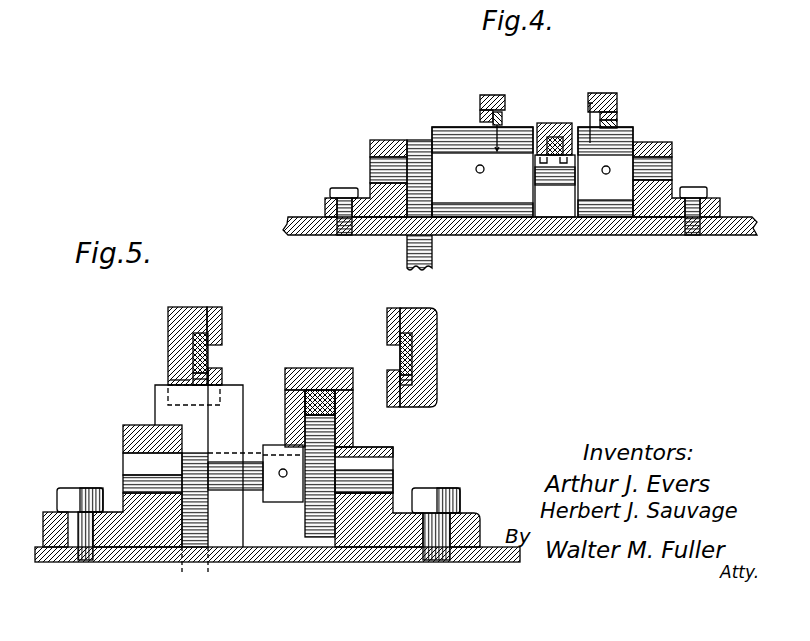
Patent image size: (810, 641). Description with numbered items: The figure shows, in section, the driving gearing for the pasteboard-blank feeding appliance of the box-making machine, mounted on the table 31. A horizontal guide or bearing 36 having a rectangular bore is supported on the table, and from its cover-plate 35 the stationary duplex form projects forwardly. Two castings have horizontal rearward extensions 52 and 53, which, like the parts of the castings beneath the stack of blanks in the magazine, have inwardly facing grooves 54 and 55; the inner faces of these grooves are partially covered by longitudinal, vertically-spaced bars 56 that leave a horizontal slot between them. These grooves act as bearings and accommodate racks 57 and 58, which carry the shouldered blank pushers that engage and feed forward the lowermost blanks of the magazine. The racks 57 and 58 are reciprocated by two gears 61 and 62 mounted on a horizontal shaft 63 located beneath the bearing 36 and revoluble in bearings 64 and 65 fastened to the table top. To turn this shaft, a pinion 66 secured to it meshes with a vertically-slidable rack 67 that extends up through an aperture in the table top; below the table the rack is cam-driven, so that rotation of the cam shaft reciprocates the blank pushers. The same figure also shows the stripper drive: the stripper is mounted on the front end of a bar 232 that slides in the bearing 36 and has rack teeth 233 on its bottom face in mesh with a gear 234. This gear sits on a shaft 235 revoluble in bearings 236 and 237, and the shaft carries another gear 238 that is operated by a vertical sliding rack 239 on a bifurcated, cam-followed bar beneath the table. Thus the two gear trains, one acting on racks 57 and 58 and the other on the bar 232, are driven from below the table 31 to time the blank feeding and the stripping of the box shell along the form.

In FIG. 4, the table 31 is at (585, 226).
In FIG. 5, the table 31 is at (382, 555).
In FIG. 4, the cover-plate 35 is at (548, 123).
In FIG. 5, the cover-plate 35 is at (315, 368).
In FIG. 4, the horizontal guide or bearing 36 is at (572, 130).
In FIG. 5, the horizontal guide or bearing 36 is at (353, 430).
In FIG. 5, the rearward extension 52 is at (173, 333).
In FIG. 4, the rearward extension 53 is at (615, 93).
In FIG. 5, the rearward extension 53 is at (437, 355).
In FIG. 4, the groove 54 is at (618, 108).
In FIG. 5, the groove 54 is at (190, 360).
In FIG. 4, the groove 55 is at (480, 117).
In FIG. 5, the groove 55 is at (412, 345).
In FIG. 4, the longitudinal bar 56 is at (506, 100).
In FIG. 5, the longitudinal bar 56 is at (222, 316).
In FIG. 4, the rack 57 is at (619, 122).
In FIG. 5, the rack 57 is at (207, 351).
In FIG. 4, the rack 58 is at (503, 121).
In FIG. 5, the rack 58 is at (400, 350).
In FIG. 4, the gear 61 is at (635, 137).
In FIG. 4, the gear 62 is at (432, 127).
In FIG. 4, the horizontal shaft 63 is at (673, 170).
In FIG. 4, the bearing 64 is at (672, 150).
In FIG. 4, the bearing 65 is at (381, 135).
In FIG. 4, the pinion 66 is at (370, 164).
In FIG. 4, the vertically-slidable rack 67 is at (407, 253).
In FIG. 4, the bar 232 is at (556, 170).
In FIG. 5, the bar 232 is at (310, 404).
In FIG. 5, the rack teeth 233 is at (353, 408).
In FIG. 5, the gear 234 is at (303, 515).
In FIG. 5, the shaft 235 is at (395, 462).
In FIG. 5, the bearing 236 is at (123, 440).
In FIG. 5, the bearing 237 is at (368, 510).
In FIG. 5, the gear 238 is at (130, 477).
In FIG. 5, the vertical sliding rack 239 is at (195, 523).